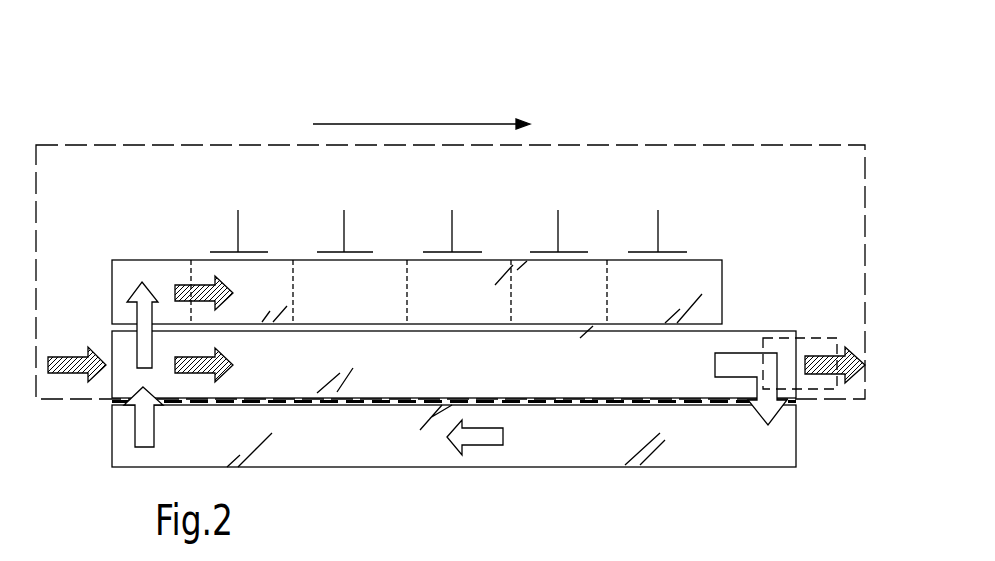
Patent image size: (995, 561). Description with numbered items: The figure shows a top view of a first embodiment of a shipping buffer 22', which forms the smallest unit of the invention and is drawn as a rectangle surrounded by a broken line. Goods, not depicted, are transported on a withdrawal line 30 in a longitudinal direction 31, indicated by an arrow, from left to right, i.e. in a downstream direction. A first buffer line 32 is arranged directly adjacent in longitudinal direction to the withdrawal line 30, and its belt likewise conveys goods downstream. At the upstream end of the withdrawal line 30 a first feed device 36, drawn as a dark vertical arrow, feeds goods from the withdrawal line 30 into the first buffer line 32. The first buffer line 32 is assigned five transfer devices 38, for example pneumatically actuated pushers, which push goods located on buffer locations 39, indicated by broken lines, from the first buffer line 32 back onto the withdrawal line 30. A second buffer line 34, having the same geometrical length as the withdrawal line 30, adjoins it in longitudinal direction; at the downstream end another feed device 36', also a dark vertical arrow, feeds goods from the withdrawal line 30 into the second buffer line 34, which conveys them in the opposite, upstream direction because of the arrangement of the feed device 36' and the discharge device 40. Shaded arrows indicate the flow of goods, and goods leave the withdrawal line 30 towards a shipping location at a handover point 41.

The shipping buffer 22' is at (450, 213).
The withdrawal line 30 is at (461, 368).
The longitudinal direction 31 is at (430, 122).
The first buffer line 32 is at (722, 287).
The second buffer line 34 is at (350, 450).
The first feed device 36 is at (110, 301).
The feed device 36' is at (749, 405).
The transfer devices 38 is at (471, 204).
The buffer locations 39 is at (670, 303).
The discharge device 40 is at (153, 427).
The handover point 41 is at (813, 389).